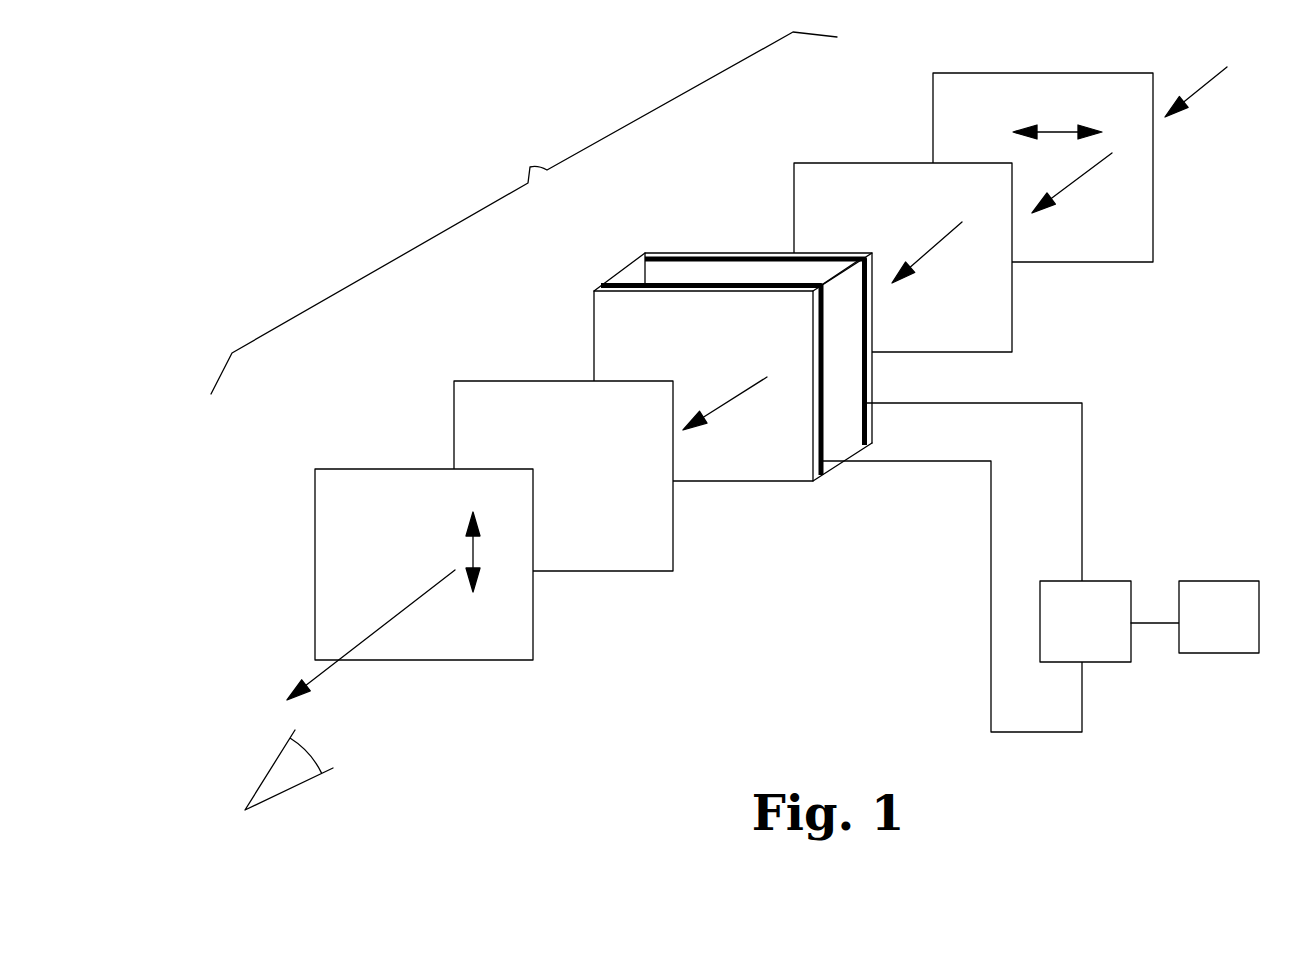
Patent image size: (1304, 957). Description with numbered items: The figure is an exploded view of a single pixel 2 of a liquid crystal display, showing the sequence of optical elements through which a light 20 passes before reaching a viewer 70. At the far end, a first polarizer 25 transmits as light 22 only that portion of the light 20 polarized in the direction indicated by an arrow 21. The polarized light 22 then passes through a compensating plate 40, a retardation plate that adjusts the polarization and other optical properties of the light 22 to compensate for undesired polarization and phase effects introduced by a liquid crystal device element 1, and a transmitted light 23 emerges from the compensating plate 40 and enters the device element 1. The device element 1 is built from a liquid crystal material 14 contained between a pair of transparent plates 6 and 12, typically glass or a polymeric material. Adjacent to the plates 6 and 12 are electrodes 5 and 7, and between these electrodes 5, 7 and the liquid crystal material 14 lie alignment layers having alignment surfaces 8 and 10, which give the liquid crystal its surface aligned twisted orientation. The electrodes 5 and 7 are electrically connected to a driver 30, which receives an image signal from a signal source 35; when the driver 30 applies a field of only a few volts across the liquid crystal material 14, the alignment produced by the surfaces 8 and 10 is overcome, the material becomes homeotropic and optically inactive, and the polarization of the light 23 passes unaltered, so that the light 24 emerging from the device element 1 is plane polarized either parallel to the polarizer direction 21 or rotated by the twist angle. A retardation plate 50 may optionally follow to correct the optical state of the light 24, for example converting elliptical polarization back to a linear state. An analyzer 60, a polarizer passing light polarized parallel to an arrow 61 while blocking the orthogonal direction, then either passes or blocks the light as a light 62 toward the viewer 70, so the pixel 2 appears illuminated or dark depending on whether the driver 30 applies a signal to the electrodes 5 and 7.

The liquid crystal device element 1 is at (894, 489).
The pixel 2 is at (524, 213).
The electrode 5 is at (863, 378).
The transparent plate 6 is at (706, 252).
The electrode 7 is at (825, 448).
The alignment surface 8 is at (668, 273).
The alignment surface 10 is at (627, 284).
The transparent plate 12 is at (598, 356).
The liquid crystal material 14 is at (760, 273).
The light 20 is at (1210, 83).
The arrow 21 is at (1057, 132).
The light 22 is at (1073, 183).
The transmitted light 23 is at (933, 243).
The light 24 is at (732, 399).
The first polarizer 25 is at (1153, 223).
The driver 30 is at (1109, 581).
The signal source 35 is at (1207, 653).
The compensating plate 40 is at (1012, 315).
The retardation plate 50 is at (673, 542).
The analyzer 60 is at (533, 633).
The arrow 61 is at (477, 552).
The output light 62 is at (370, 633).
The viewer 70 is at (288, 793).